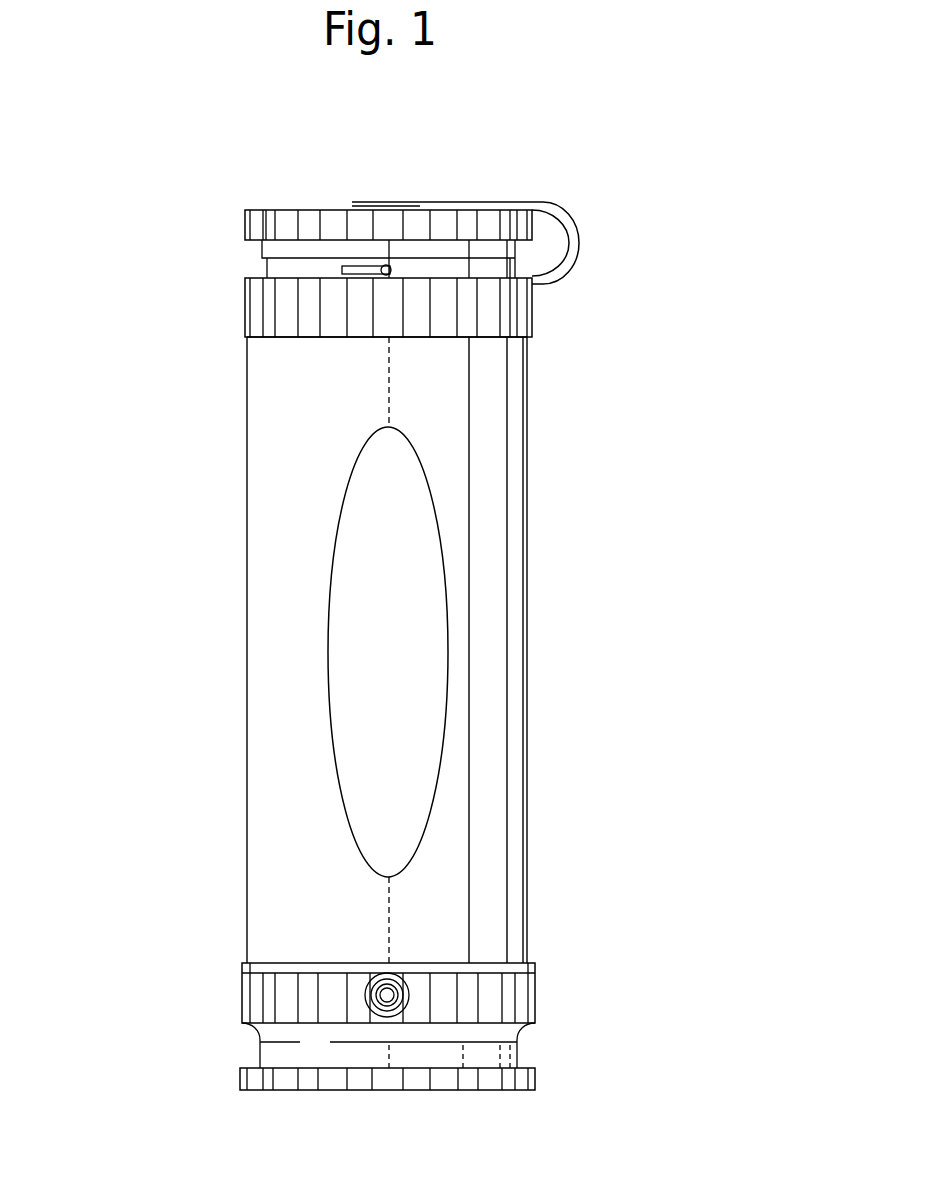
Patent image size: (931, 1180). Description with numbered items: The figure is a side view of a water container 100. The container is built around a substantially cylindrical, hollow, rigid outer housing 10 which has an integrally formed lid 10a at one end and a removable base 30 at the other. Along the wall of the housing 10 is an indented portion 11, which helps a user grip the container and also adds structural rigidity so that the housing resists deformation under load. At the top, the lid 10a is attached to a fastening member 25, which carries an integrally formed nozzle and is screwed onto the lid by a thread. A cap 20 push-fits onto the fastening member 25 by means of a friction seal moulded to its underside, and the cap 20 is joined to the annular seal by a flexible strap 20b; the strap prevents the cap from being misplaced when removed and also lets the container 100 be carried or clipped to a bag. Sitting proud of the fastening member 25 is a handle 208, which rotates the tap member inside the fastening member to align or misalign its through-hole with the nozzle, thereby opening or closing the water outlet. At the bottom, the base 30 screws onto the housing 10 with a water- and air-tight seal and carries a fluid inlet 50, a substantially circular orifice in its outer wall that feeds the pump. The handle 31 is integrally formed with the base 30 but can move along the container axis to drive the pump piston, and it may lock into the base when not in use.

The water container 100 is at (638, 338).
The outer housing 10 is at (495, 635).
The lid 10a is at (247, 313).
The indented portion 11 is at (407, 763).
The cap 20 is at (245, 227).
The flexible strap 20b is at (575, 233).
The handle 208 is at (353, 267).
The fastening member 25 is at (285, 268).
The base 30 is at (525, 995).
The handle 31 is at (535, 1078).
The fluid inlet 50 is at (378, 993).